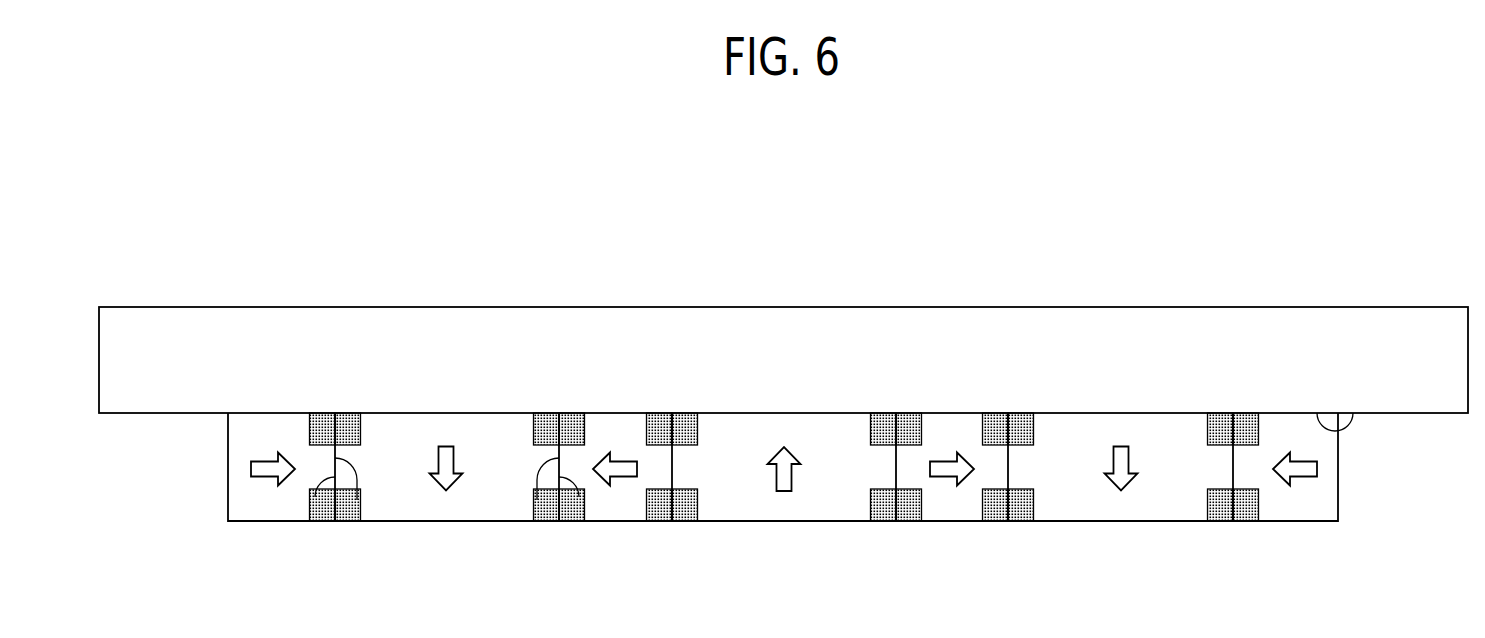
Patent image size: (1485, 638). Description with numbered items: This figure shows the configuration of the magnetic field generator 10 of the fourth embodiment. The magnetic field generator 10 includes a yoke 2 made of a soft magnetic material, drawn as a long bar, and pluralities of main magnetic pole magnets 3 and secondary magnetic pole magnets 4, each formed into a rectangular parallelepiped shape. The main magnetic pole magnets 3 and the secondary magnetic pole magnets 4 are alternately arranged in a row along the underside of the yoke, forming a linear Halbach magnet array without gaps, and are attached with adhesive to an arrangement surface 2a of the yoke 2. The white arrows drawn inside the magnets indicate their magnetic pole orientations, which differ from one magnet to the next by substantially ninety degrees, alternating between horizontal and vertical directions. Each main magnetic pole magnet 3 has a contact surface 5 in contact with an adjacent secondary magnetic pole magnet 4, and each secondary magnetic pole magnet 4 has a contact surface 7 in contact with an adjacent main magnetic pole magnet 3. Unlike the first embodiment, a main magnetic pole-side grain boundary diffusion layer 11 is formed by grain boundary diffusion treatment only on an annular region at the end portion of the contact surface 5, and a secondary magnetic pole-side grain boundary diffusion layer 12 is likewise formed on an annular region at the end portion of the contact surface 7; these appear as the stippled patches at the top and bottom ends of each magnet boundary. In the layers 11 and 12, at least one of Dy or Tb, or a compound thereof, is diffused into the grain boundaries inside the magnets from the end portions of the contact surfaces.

The magnetic field generator 10 is at (1132, 293).
The yoke 2 is at (783, 348).
The arrangement surface 2a is at (1353, 410).
The main magnetic pole magnet 3 is at (453, 503).
The secondary magnetic pole magnet 4 is at (257, 503).
The contact surface 5 is at (315, 500).
The contact surface 7 is at (357, 500).
The main magnetic pole-side grain boundary diffusion layer 11 is at (353, 432).
The secondary magnetic pole-side grain boundary diffusion layer 12 is at (323, 432).